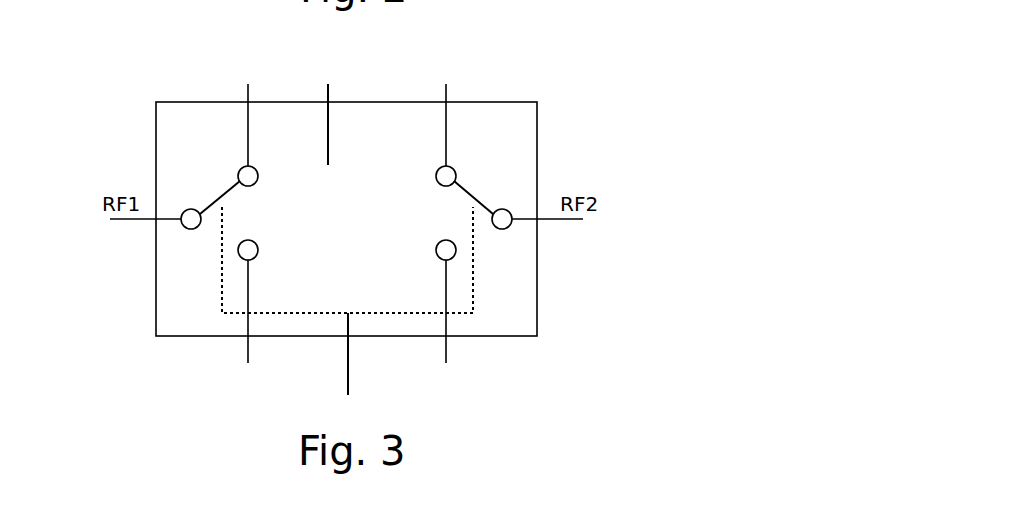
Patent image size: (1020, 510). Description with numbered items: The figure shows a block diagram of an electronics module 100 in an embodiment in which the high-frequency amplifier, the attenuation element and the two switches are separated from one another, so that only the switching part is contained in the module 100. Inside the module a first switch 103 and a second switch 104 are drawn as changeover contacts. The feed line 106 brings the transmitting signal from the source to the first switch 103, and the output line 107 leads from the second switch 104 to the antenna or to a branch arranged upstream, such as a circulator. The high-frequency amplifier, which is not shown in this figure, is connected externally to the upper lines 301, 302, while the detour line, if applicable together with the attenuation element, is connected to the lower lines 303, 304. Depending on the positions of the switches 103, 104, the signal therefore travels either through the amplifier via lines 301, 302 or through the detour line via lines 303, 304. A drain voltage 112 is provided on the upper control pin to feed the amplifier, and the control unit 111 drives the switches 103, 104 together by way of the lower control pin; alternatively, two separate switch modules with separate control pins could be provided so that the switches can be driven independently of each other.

The electronics module 100 is at (572, 62).
The first switch 103 is at (230, 190).
The second switch 104 is at (458, 192).
The feed line RF1 106 is at (118, 223).
The output line RF2 107 is at (563, 222).
The control unit 111 is at (350, 358).
The drain voltage 112 is at (332, 92).
The first amplifier line 301 is at (252, 92).
The second amplifier line 302 is at (450, 92).
The first detour line connection 303 is at (250, 358).
The second detour line connection 304 is at (448, 358).